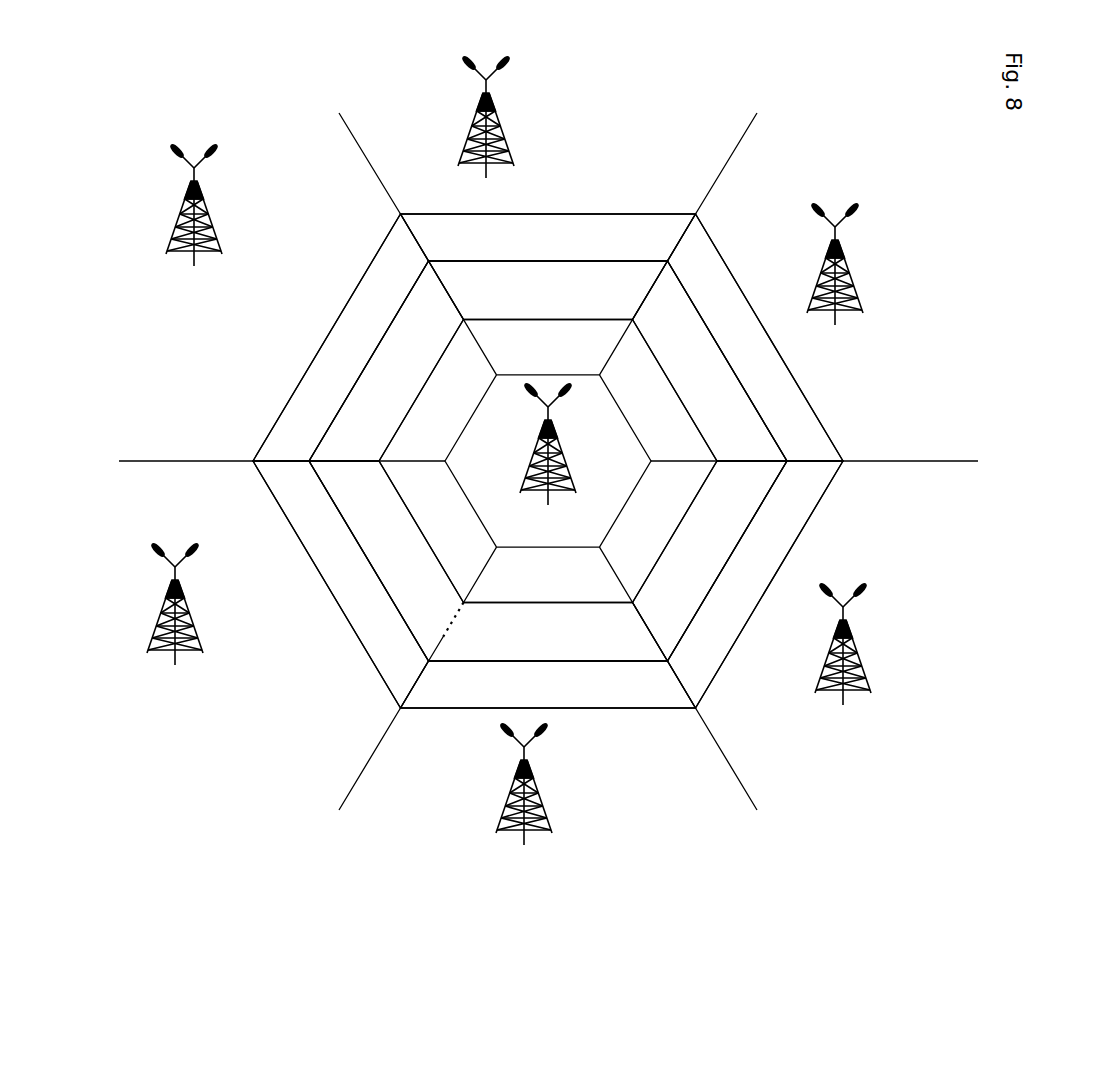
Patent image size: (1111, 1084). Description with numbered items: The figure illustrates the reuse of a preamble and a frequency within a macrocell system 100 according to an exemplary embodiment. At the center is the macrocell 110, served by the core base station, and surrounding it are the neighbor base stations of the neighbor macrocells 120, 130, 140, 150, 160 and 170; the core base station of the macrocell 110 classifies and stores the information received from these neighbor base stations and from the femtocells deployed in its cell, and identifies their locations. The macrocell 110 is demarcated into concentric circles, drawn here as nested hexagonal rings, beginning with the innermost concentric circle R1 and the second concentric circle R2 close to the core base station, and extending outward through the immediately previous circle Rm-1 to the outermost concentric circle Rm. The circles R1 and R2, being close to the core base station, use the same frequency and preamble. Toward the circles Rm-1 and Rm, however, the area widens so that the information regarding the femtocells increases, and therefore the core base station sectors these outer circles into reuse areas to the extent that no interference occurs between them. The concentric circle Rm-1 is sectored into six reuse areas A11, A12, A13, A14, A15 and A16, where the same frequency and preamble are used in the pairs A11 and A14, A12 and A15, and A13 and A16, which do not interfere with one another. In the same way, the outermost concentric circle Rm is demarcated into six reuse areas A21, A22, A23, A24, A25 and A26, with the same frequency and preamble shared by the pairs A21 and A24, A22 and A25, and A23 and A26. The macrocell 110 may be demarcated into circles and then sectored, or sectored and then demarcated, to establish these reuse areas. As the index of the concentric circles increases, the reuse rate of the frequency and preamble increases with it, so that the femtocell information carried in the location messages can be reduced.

The wireless communication system 100 is at (873, 135).
The macrocell 110 is at (540, 455).
The neighbor base station 120 is at (478, 127).
The neighbor base station 130 is at (847, 271).
The neighbor base station 140 is at (856, 651).
The neighbor base station 150 is at (508, 815).
The neighbor base station 160 is at (166, 613).
The neighbor base station 170 is at (186, 215).
The reuse area A11 is at (548, 290).
The reuse area A12 is at (710, 361).
The reuse area A13 is at (710, 561).
The reuse area A14 is at (548, 632).
The reuse area A15 is at (386, 561).
The reuse area A16 is at (386, 361).
The reuse area A21 is at (548, 237).
The reuse area A22 is at (756, 337).
The reuse area A23 is at (756, 584).
The reuse area A24 is at (548, 684).
The reuse area A25 is at (341, 584).
The reuse area A26 is at (341, 337).
The concentric circle R1 is at (548, 461).
The concentric circle R2 is at (548, 461).
The concentric circle Rm-1 is at (548, 461).
The outermost concentric circle Rm is at (548, 462).